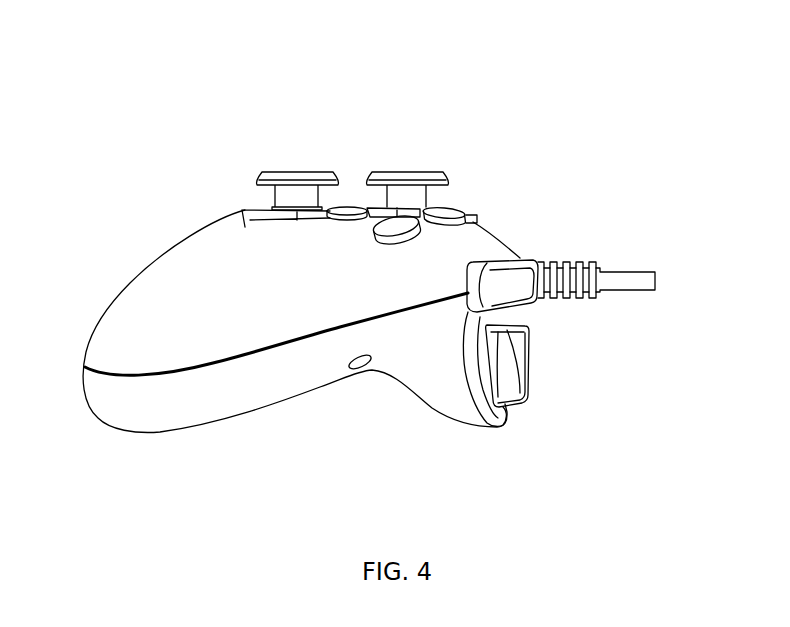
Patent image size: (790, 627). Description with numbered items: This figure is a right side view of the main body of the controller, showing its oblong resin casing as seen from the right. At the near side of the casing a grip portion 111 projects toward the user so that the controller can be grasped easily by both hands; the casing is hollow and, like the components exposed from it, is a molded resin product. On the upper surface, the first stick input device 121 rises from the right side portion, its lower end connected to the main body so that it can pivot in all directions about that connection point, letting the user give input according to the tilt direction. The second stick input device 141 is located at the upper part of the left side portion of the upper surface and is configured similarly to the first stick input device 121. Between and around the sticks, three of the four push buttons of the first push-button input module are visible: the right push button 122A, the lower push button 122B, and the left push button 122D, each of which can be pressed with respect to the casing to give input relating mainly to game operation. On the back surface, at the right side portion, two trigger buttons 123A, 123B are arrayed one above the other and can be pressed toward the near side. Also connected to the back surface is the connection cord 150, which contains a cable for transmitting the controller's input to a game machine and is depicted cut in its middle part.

The grip portion 111 is at (123, 415).
The first stick input device 121 is at (302, 171).
The second stick input device 141 is at (414, 171).
The push button 122A is at (392, 234).
The push button 122B is at (352, 206).
The push button 122D is at (460, 212).
The trigger button 123A is at (525, 294).
The trigger button 123B is at (522, 376).
The connection cord 150 is at (628, 273).